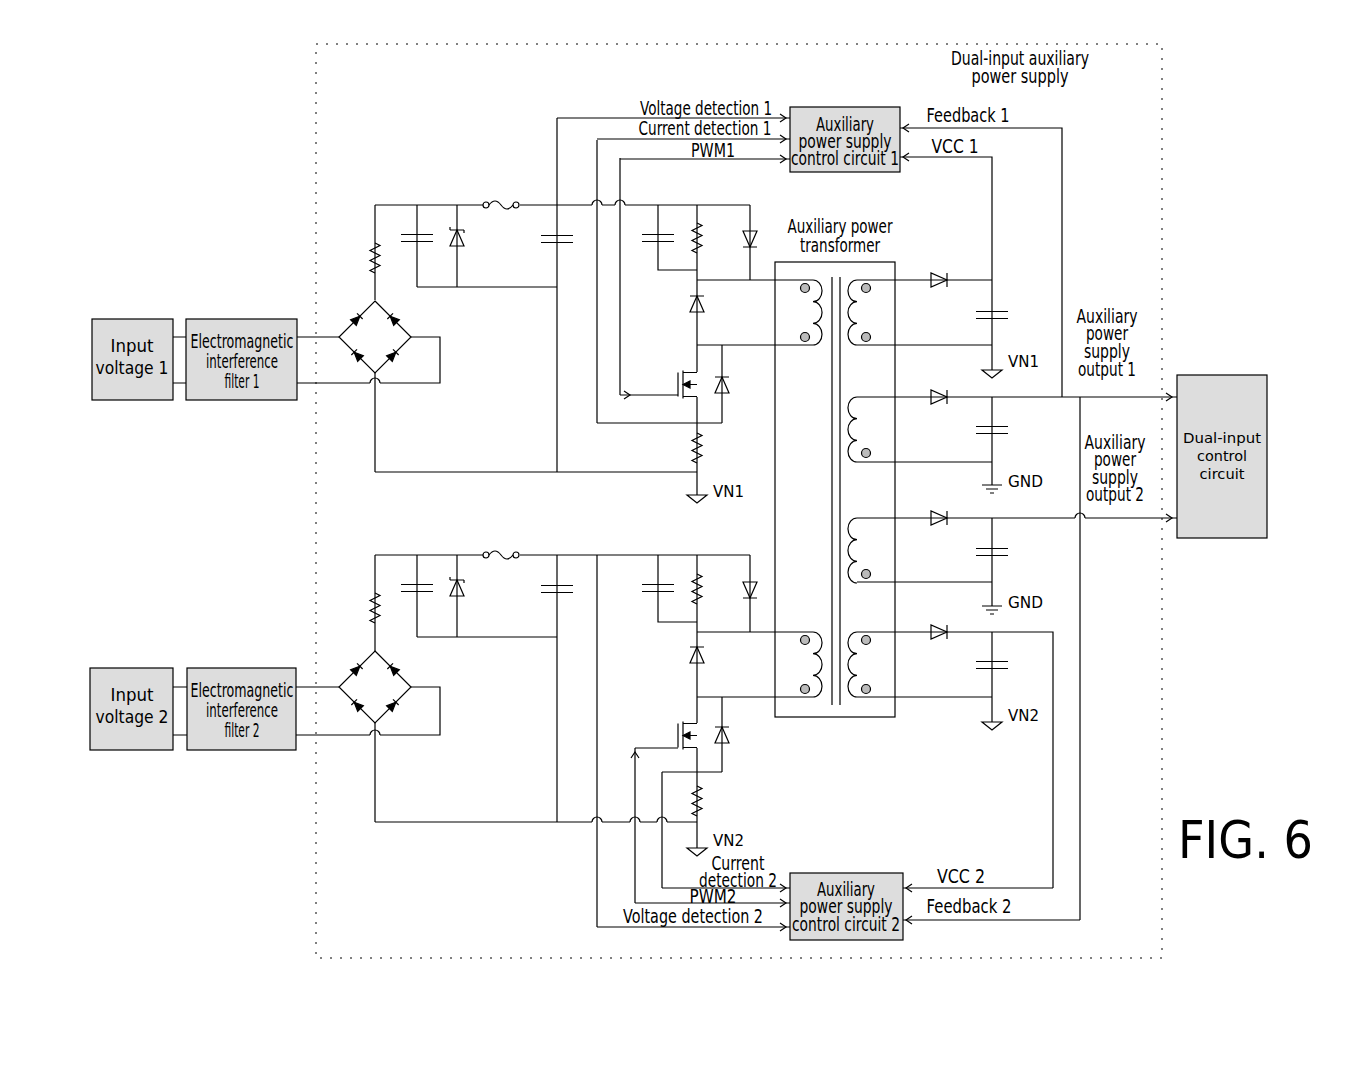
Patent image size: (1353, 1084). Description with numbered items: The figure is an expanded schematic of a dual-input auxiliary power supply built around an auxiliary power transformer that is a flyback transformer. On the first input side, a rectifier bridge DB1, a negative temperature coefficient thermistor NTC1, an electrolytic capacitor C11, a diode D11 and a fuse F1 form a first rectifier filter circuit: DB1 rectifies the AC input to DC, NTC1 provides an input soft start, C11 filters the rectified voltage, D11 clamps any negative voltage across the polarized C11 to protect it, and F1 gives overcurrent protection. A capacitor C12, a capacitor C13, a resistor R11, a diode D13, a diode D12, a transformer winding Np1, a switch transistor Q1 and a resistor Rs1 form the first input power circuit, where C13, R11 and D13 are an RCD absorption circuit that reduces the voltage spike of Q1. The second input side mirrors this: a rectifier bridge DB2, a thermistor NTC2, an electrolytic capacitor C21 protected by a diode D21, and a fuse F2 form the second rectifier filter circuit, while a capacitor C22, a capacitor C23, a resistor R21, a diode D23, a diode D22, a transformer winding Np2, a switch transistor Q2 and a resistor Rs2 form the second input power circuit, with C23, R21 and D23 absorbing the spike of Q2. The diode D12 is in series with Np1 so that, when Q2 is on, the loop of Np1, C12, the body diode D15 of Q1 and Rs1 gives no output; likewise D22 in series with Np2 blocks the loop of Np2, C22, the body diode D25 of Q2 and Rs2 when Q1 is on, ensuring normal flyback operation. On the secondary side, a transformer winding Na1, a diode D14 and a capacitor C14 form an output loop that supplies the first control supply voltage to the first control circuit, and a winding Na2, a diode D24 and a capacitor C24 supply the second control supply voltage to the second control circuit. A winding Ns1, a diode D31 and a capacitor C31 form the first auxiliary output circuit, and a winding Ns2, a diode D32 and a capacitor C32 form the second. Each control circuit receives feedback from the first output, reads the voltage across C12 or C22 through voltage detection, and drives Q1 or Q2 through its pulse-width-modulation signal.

The fuse F1 is at (501, 196).
The negative temperature coefficient thermistor NTC1 is at (351, 252).
The electrolytic capacitor C11 is at (408, 246).
The diode D11 is at (477, 246).
The capacitor C12 is at (546, 295).
The rectifier bridge DB1 is at (389, 337).
The capacitor C13 is at (662, 237).
The resistor R11 is at (713, 237).
The diode D12 is at (737, 242).
The diode D13 is at (718, 302).
The switch transistor Q1 is at (658, 376).
The body diode D15 is at (744, 384).
The resistor Rs1 is at (716, 448).
The transformer winding Np1 is at (799, 312).
The transformer winding Na1 is at (871, 312).
The transformer winding Ns1 is at (871, 429).
The transformer winding Ns2 is at (871, 550).
The transformer winding Na2 is at (871, 664).
The transformer winding Np2 is at (799, 664).
The diode D14 is at (943, 290).
The capacitor C14 is at (969, 325).
The diode D31 is at (1036, 407).
The capacitor C31 is at (969, 441).
The diode D32 is at (1036, 528).
The capacitor C32 is at (969, 562).
The diode D24 is at (974, 756).
The capacitor C24 is at (969, 677).
The fuse F2 is at (501, 546).
The negative temperature coefficient thermistor NTC2 is at (351, 603).
The electrolytic capacitor C21 is at (408, 596).
The diode D21 is at (477, 596).
The capacitor C22 is at (546, 688).
The rectifier bridge DB2 is at (389, 687).
The capacitor C23 is at (658, 588).
The resistor R21 is at (713, 588).
The diode D22 is at (737, 593).
The diode D23 is at (718, 652).
The switch transistor Q2 is at (664, 731).
The body diode D25 is at (745, 734).
The resistor Rs2 is at (716, 801).